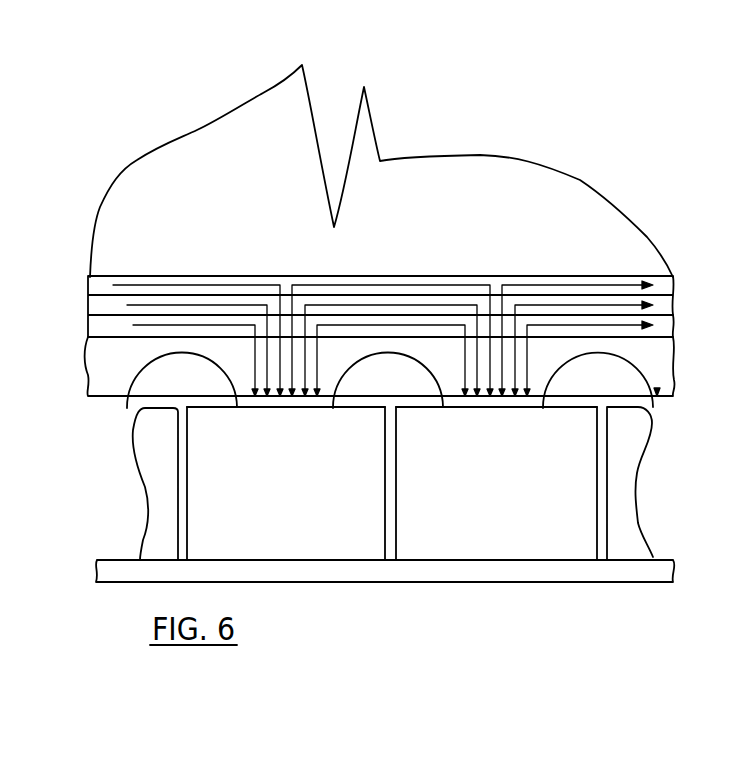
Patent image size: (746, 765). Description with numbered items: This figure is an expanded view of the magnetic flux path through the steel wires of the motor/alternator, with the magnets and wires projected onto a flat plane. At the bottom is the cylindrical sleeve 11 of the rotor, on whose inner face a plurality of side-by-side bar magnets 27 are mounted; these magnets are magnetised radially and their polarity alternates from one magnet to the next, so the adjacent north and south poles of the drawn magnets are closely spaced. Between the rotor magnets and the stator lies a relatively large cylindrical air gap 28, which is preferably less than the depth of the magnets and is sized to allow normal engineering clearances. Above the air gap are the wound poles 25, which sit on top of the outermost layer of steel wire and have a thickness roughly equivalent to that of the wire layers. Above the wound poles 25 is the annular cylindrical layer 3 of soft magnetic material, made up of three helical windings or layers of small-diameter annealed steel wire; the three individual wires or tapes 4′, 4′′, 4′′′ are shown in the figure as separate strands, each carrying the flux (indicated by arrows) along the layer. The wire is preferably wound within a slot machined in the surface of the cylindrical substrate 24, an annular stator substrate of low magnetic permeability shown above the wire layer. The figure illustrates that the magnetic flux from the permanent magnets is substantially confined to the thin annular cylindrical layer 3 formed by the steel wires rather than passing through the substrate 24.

The cylindrical substrate 24 is at (543, 187).
The annular cylindrical layer of steel wires 3 is at (689, 305).
The steel wire 4′′′ is at (88, 290).
The steel wire 4′′ is at (88, 310).
The steel wire 4′ is at (100, 328).
The wound poles 25 is at (658, 365).
The air gap 28 is at (666, 406).
The bar magnets 27 is at (546, 535).
The cylindrical sleeve 11 is at (436, 583).